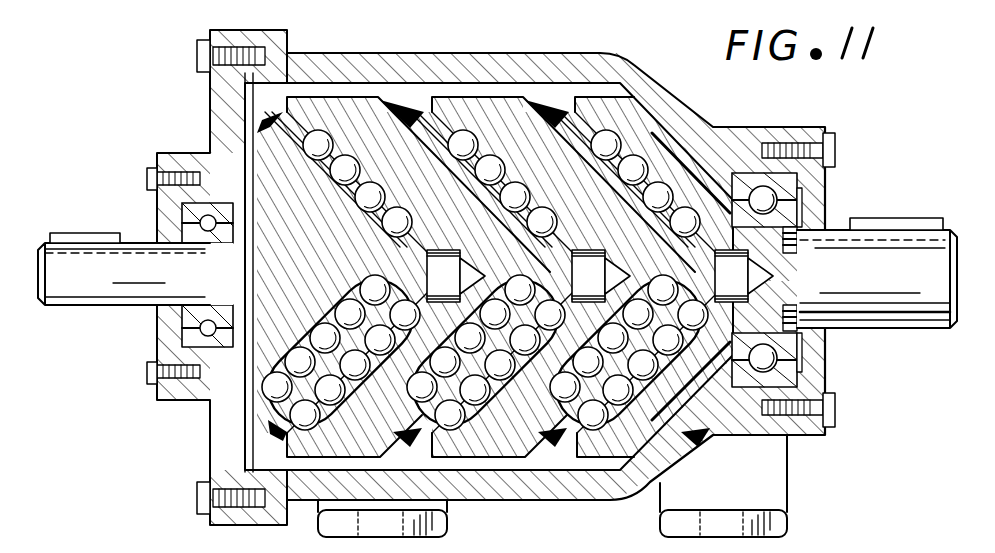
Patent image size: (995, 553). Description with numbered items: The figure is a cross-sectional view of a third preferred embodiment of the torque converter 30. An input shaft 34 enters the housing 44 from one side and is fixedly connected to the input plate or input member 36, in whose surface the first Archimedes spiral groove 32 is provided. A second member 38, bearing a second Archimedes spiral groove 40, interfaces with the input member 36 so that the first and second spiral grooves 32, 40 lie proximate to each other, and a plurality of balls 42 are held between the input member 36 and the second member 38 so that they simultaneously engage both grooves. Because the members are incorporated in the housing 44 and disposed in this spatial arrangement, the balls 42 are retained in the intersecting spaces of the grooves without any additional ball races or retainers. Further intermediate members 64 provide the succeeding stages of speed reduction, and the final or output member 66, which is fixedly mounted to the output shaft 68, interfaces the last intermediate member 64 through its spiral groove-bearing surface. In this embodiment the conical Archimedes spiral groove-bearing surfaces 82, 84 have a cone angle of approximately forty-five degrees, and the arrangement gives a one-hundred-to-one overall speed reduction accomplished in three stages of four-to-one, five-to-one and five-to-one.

The torque converter 30 is at (650, 56).
The Archimedes spiral groove 32 is at (400, 232).
The input shaft 34 is at (80, 297).
The input member 36 is at (265, 163).
The second member 38 is at (385, 108).
The second Archimedes spiral groove 40 is at (346, 158).
The balls 42 is at (318, 133).
The housing 44 is at (600, 58).
The intermediate member 64 is at (517, 107).
The output member 66 is at (653, 140).
The output shaft 68 is at (902, 320).
The conical Archimedes spiral groove-bearing surface 82 is at (388, 210).
The conical Archimedes spiral groove-bearing surface 84 is at (426, 240).